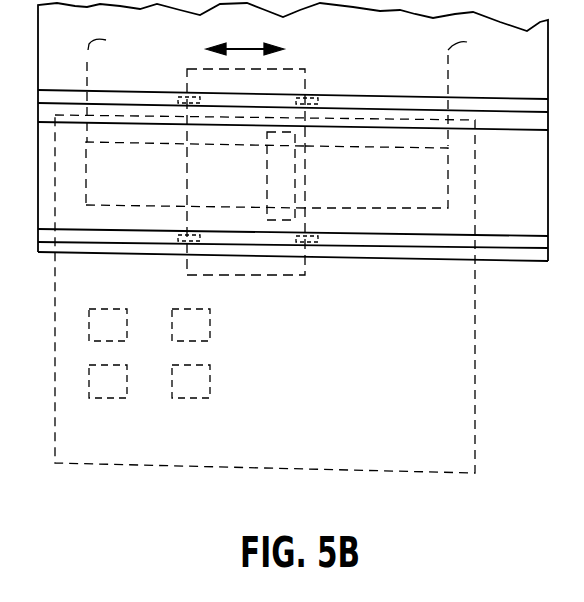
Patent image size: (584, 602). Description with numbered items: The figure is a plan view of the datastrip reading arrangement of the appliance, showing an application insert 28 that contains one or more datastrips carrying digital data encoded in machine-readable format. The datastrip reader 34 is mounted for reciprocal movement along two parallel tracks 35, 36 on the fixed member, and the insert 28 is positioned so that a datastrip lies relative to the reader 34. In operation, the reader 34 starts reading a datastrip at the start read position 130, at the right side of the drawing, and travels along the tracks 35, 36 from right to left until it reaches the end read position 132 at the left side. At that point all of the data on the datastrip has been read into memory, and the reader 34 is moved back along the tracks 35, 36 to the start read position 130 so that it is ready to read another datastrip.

The application insert 28 is at (476, 347).
The datastrip reader 34 is at (265, 276).
The track 35 is at (378, 258).
The track 36 is at (368, 100).
The start read position 130 is at (446, 78).
The end read position 132 is at (87, 63).